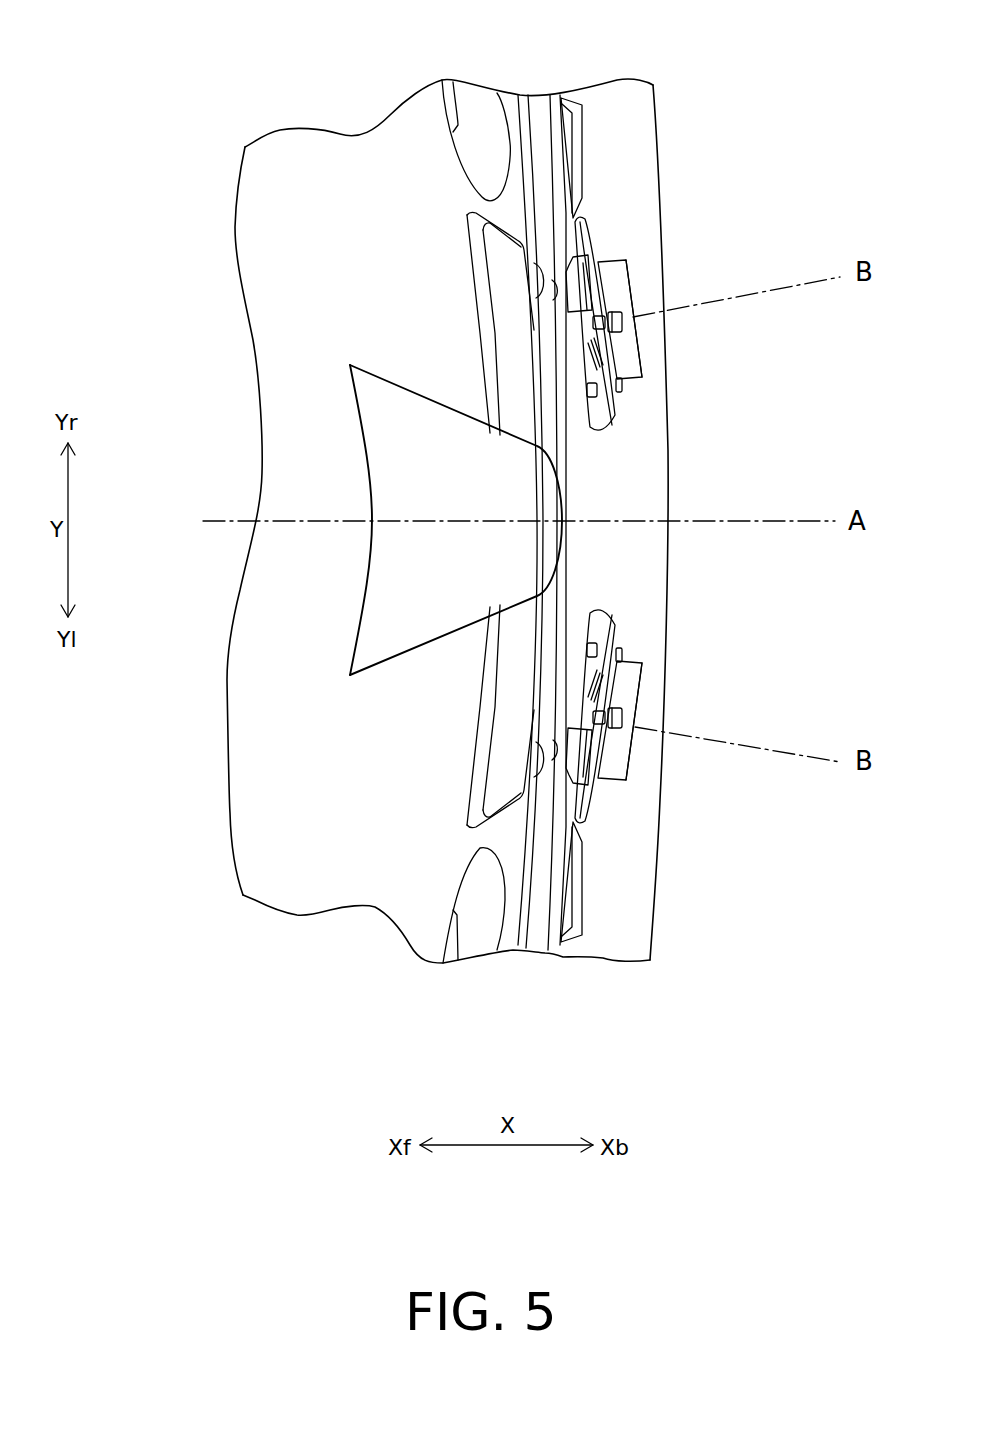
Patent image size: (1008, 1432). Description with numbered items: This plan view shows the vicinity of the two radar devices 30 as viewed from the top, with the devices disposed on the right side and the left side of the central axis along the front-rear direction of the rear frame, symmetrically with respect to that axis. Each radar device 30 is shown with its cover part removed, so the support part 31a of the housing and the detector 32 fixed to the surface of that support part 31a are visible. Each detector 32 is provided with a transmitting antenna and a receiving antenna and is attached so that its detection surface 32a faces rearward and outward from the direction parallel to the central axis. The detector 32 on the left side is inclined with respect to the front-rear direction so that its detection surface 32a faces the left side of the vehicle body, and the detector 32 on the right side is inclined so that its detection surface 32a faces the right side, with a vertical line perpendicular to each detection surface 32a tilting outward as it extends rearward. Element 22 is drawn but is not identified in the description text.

The lens portion 22 is at (482, 146).
The radar device 30 is at (595, 226).
The support part 31a is at (596, 250).
The detector 32 is at (622, 360).
The detection surface 32a is at (632, 291).